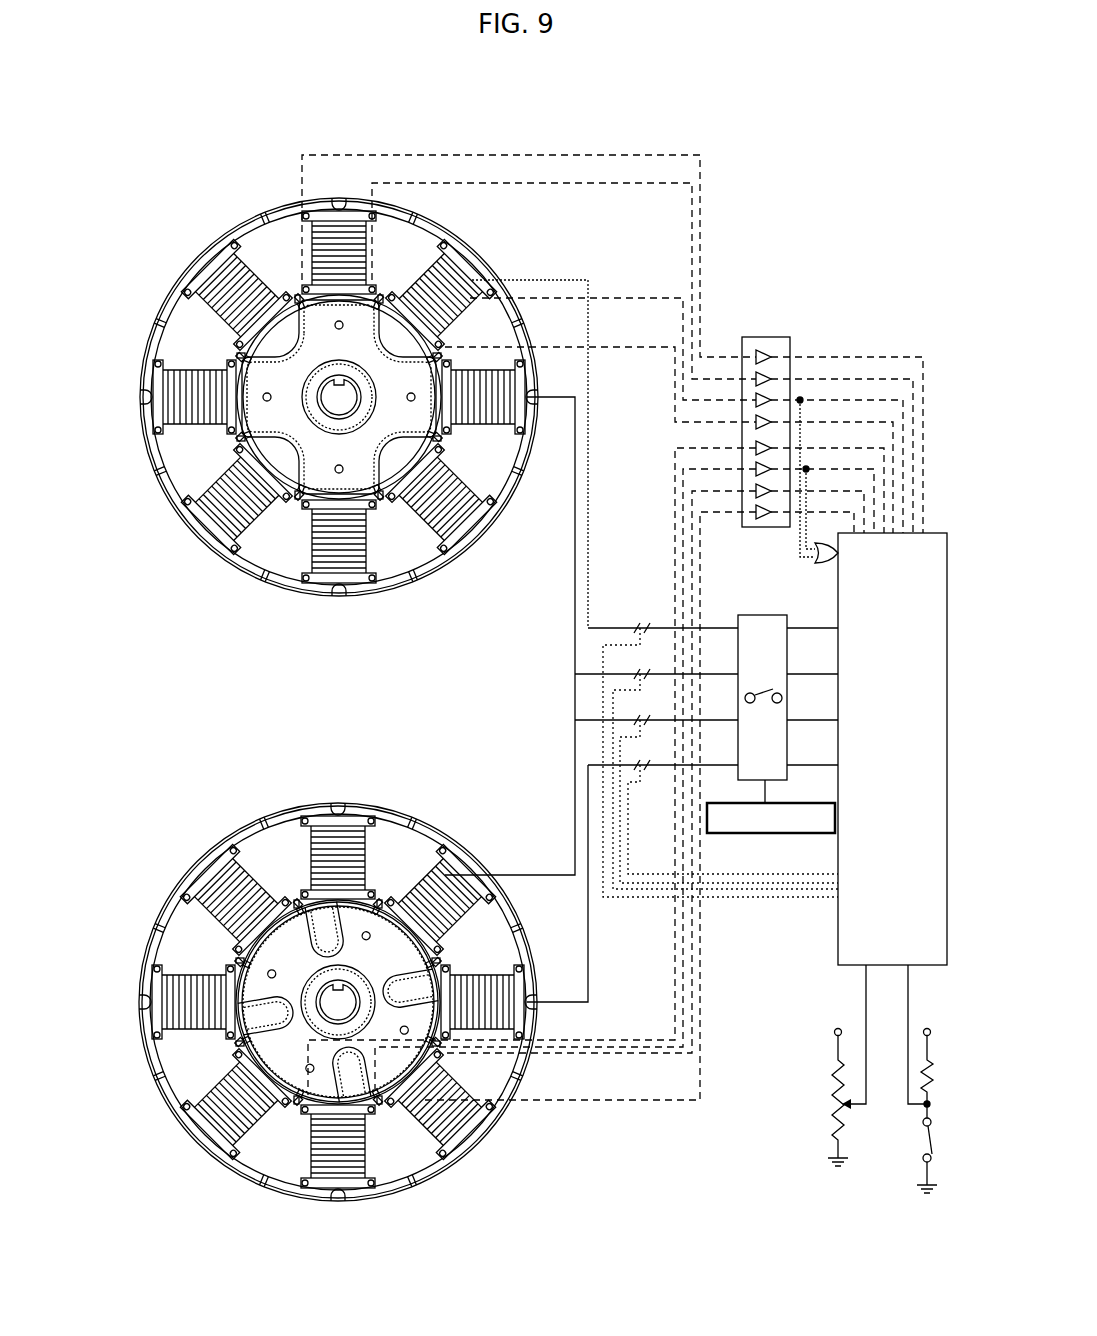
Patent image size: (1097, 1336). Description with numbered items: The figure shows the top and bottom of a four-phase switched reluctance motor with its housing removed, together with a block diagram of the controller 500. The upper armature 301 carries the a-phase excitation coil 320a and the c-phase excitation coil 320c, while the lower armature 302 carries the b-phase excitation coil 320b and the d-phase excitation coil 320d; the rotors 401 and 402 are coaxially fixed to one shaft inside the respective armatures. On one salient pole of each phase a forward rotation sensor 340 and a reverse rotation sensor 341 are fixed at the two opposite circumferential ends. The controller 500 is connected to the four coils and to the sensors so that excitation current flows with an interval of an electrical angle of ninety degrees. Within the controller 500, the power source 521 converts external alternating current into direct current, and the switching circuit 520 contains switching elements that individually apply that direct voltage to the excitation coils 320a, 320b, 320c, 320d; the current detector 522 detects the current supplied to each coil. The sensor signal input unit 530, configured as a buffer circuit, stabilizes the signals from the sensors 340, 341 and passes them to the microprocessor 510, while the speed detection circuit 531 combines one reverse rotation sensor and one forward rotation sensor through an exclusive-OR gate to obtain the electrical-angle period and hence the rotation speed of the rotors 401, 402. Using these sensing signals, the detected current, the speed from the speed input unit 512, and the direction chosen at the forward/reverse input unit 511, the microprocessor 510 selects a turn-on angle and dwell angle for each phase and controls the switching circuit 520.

The upper armature 301 is at (212, 212).
The lower armature 302 is at (210, 810).
The a-phase excitation coil 320a is at (373, 222).
The b-phase excitation coil 320b is at (338, 803).
The c-phase excitation coil 320c is at (200, 262).
The d-phase excitation coil 320d is at (200, 865).
The forward rotation sensor 340 is at (298, 288).
The reverse rotation sensor 341 is at (376, 282).
The rotor 401 is at (365, 361).
The rotor 402 is at (367, 964).
The controller 500 is at (818, 280).
The microprocessor 510 is at (838, 960).
The forward/reverse input unit 511 is at (925, 1152).
The speed input unit 512 is at (832, 1100).
The switching circuit 520 is at (745, 615).
The power source 521 is at (760, 834).
The current detector 522 is at (640, 626).
The sensor signal input unit 530 is at (765, 337).
The speed detection circuit 531 is at (820, 560).